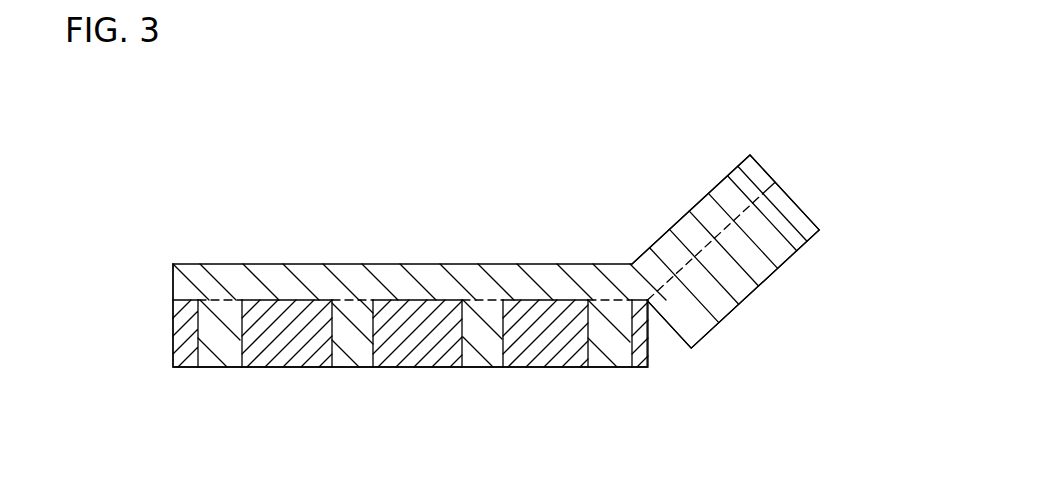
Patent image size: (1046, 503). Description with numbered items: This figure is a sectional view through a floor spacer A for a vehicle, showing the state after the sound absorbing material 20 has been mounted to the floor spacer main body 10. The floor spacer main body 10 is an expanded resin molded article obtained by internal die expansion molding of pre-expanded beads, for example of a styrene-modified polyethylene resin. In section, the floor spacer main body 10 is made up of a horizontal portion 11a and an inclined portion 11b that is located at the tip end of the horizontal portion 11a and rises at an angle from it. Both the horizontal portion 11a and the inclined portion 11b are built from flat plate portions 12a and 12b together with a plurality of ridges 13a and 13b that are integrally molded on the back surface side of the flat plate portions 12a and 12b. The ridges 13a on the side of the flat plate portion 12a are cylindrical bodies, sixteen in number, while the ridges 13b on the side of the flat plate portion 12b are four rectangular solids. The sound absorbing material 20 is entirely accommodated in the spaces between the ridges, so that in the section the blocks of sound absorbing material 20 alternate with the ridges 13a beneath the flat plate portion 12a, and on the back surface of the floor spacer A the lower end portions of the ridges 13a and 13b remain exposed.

The floor spacer for a vehicle A is at (270, 172).
The floor spacer main body 10 is at (547, 253).
The horizontal portion 11a is at (392, 254).
The inclined portion 11b is at (707, 180).
The flat plate portion 12a is at (288, 282).
The flat plate portion 12b is at (747, 183).
The ridges 13a is at (220, 345).
The ridges 13b is at (767, 237).
The sound absorbing material 20 is at (280, 345).